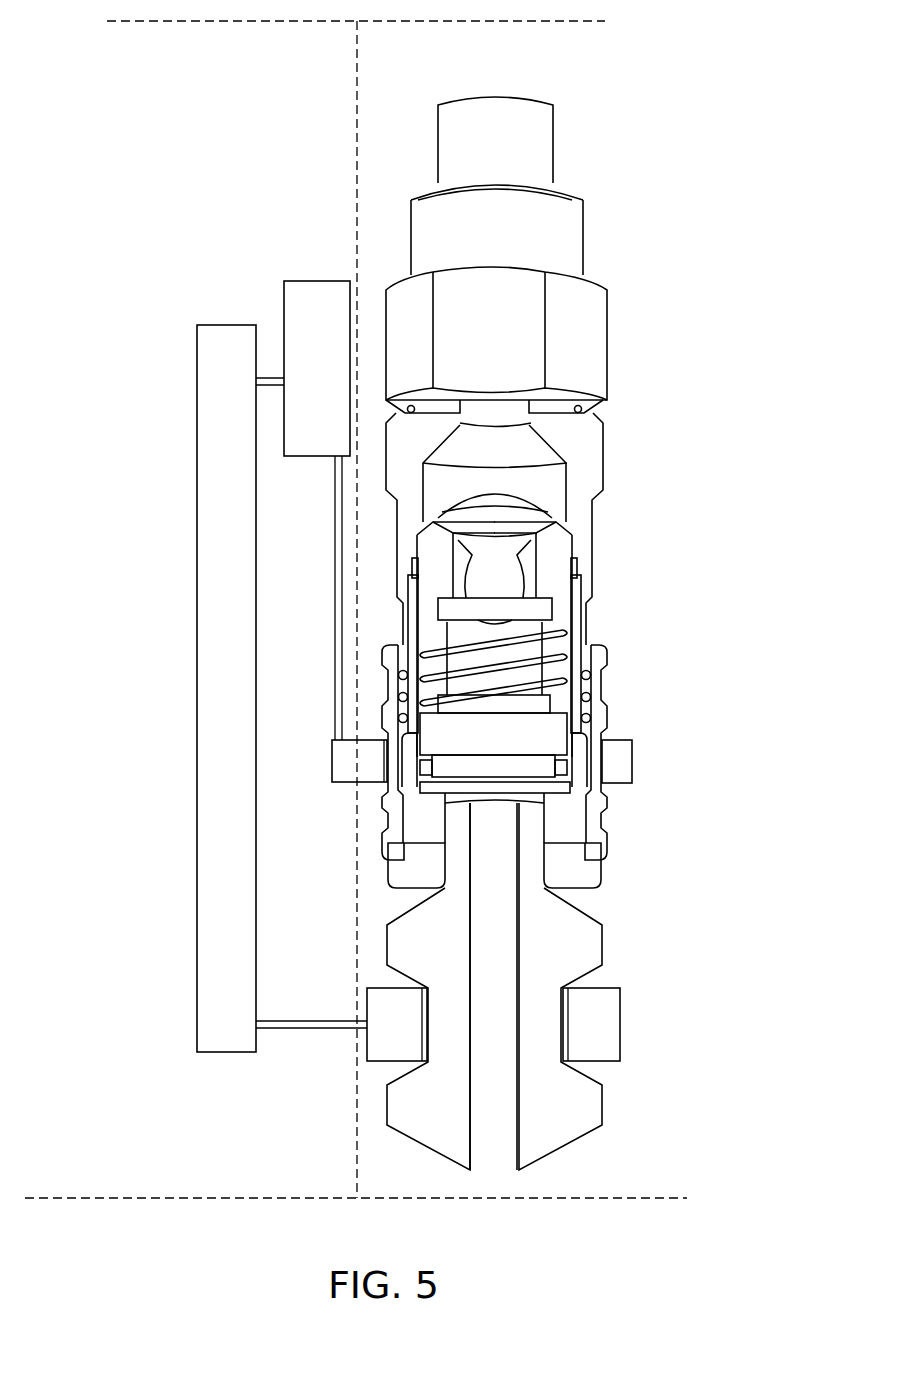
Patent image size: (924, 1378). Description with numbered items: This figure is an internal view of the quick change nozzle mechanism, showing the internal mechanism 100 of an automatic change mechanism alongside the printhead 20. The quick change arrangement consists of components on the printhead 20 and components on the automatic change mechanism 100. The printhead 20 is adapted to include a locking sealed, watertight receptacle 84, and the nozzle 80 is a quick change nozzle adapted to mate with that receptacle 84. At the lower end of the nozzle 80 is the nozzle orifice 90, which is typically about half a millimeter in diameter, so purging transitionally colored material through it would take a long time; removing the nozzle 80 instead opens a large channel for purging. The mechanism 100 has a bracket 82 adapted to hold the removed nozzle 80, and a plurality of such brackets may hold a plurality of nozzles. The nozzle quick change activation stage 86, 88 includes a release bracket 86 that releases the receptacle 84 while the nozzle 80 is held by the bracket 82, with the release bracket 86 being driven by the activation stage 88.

The internal mechanism 100 is at (25, 28).
The printhead 20 is at (782, 28).
The nozzle 80 is at (600, 945).
The bracket 82 is at (385, 1045).
The receptacle 84 is at (604, 470).
The bracket 86 is at (332, 752).
The activation stage 88 is at (284, 293).
The nozzle orifice 90 is at (502, 1172).